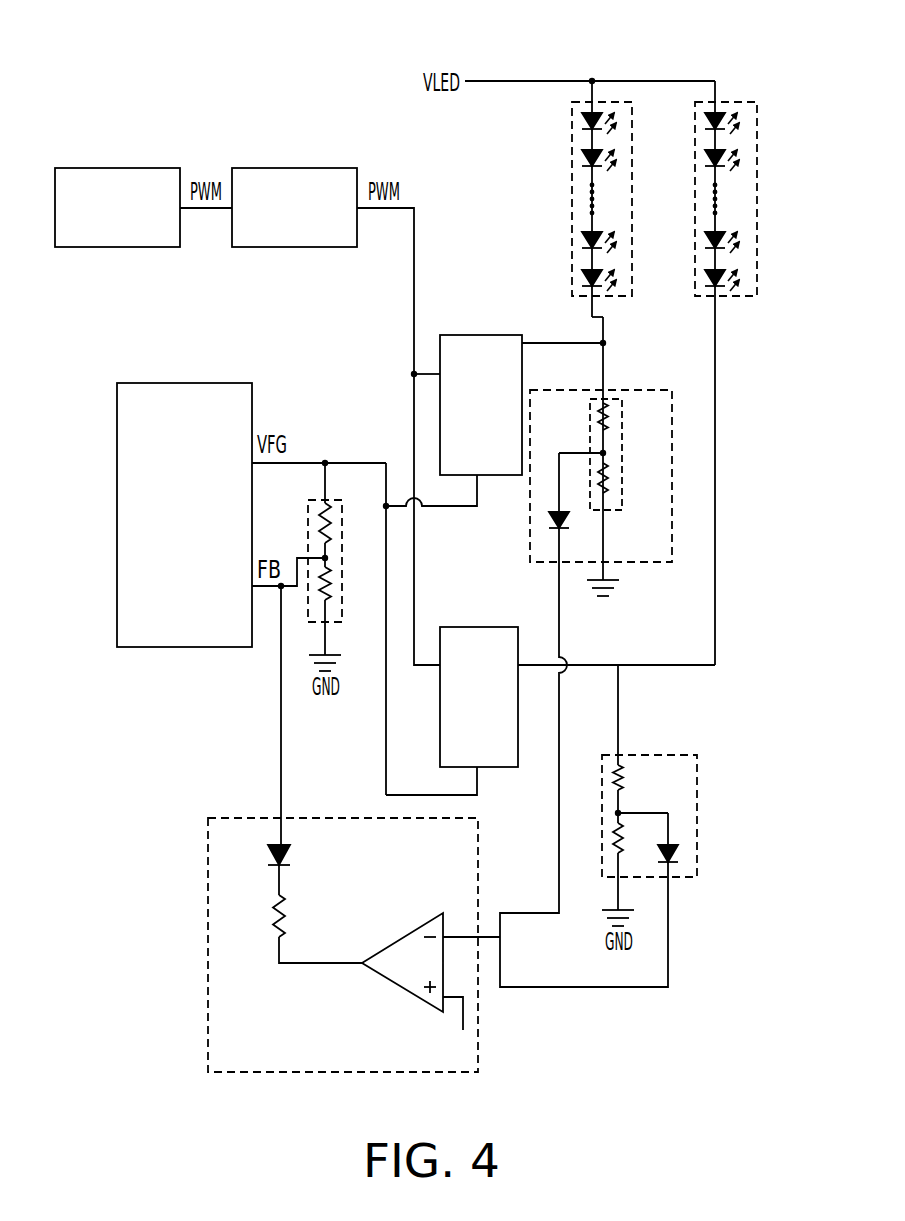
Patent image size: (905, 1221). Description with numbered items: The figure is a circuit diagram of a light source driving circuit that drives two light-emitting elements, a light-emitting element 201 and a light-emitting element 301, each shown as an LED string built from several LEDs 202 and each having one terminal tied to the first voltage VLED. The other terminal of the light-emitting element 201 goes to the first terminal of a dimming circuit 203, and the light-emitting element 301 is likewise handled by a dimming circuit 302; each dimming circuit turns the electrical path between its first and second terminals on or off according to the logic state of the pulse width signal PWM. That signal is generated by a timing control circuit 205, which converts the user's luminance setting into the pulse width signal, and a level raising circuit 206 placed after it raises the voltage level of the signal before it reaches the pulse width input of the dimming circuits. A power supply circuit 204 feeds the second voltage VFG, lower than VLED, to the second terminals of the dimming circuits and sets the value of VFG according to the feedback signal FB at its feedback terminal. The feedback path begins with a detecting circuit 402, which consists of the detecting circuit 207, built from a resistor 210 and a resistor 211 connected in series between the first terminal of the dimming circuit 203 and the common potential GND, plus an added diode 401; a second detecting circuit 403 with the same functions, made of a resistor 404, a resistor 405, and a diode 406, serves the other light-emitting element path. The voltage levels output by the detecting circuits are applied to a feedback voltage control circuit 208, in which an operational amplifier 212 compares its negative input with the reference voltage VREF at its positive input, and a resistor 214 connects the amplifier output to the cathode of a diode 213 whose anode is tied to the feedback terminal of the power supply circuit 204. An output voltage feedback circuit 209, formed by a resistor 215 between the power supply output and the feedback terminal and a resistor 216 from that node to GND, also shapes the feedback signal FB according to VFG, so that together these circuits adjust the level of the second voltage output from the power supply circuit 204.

The light-emitting element 201 is at (625, 157).
The LED 202 is at (610, 121).
The light-emitting element 301 is at (727, 98).
The timing control circuit 205 is at (112, 247).
The level raising circuit 206 is at (288, 247).
The power supply circuit 204 is at (183, 647).
The dimming circuit 203 is at (490, 475).
The dimming circuit 302 is at (503, 767).
The detecting circuit 207 is at (601, 476).
The resistor 210 is at (611, 421).
The resistor 211 is at (611, 485).
The diode 401 is at (559, 512).
The detecting circuit 402 is at (625, 562).
The output voltage feedback circuit 209 is at (343, 567).
The resistor 215 is at (333, 525).
The resistor 216 is at (333, 588).
The feedback voltage control circuit 208 is at (320, 945).
The operational amplifier 212 is at (405, 990).
The diode 213 is at (268, 855).
The resistor 214 is at (272, 907).
The detecting circuit 403 is at (680, 787).
The resistor 404 is at (630, 777).
The resistor 405 is at (630, 840).
The diode 406 is at (680, 850).